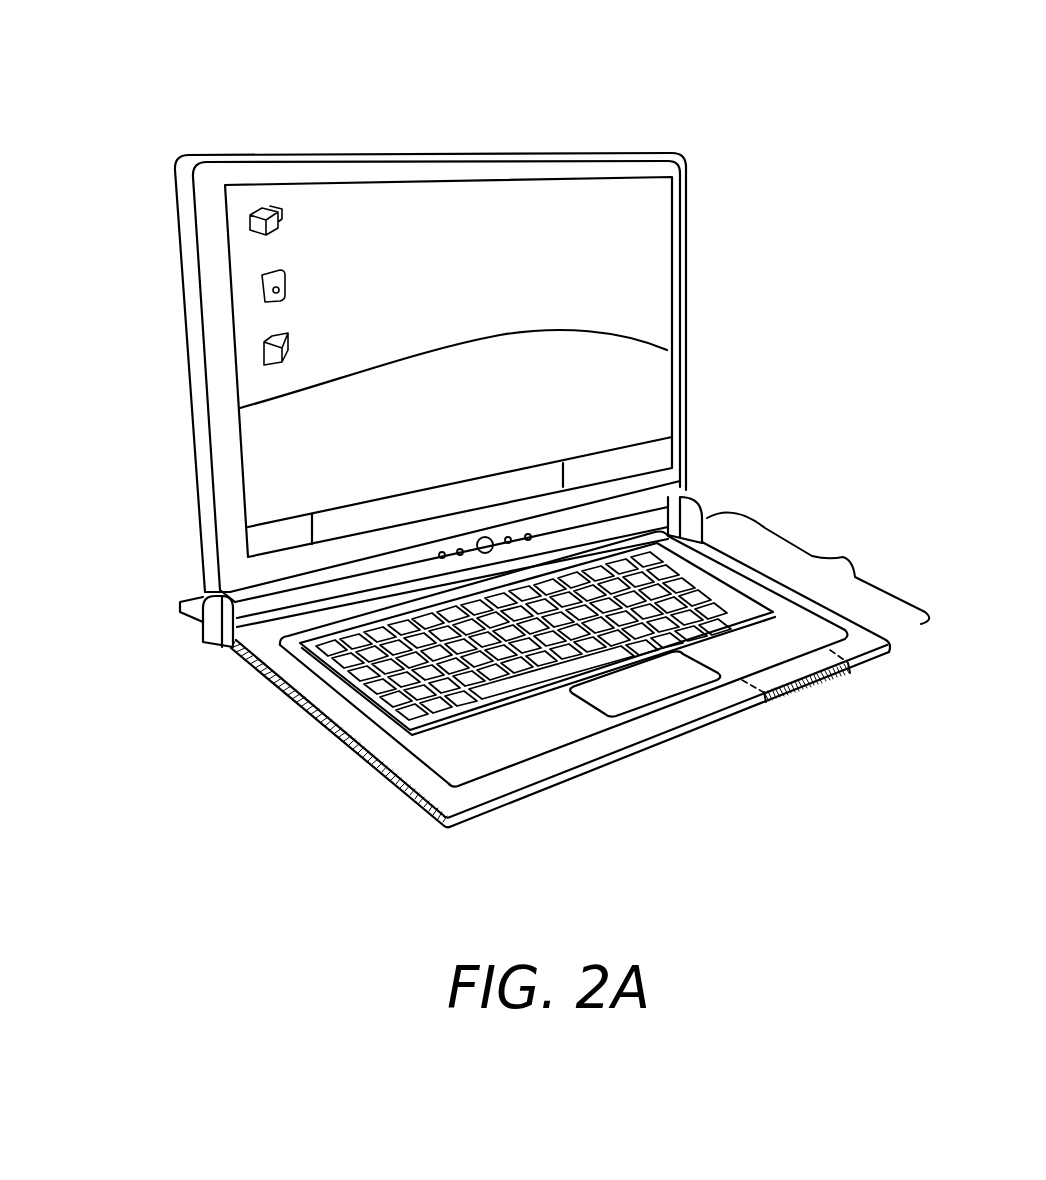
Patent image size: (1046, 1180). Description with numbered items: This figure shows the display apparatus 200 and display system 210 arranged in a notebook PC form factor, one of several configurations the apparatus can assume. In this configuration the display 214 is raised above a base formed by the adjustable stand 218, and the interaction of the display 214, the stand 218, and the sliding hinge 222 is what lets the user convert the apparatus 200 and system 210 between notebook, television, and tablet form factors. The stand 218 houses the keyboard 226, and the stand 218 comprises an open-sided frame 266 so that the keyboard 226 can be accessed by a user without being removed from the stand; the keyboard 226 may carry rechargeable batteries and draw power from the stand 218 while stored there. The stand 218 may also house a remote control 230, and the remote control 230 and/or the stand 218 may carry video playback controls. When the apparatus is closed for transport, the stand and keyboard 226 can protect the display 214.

The display apparatus 200 is at (168, 621).
The display system 210 is at (341, 64).
The display 214 is at (663, 263).
The stand 218 is at (201, 594).
The sliding hinge 222 is at (283, 697).
The keyboard 226 is at (724, 598).
The remote control 230 is at (818, 682).
The open-sided frame 266 is at (818, 568).